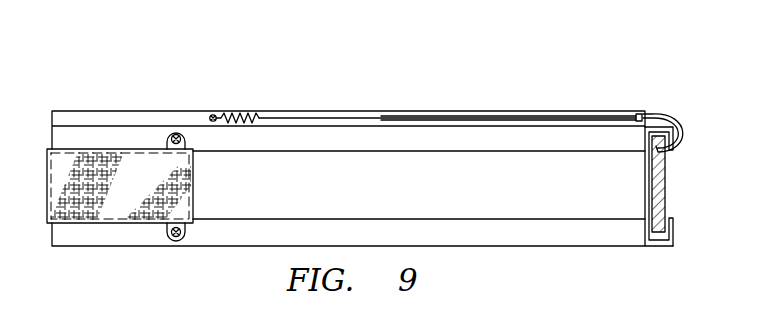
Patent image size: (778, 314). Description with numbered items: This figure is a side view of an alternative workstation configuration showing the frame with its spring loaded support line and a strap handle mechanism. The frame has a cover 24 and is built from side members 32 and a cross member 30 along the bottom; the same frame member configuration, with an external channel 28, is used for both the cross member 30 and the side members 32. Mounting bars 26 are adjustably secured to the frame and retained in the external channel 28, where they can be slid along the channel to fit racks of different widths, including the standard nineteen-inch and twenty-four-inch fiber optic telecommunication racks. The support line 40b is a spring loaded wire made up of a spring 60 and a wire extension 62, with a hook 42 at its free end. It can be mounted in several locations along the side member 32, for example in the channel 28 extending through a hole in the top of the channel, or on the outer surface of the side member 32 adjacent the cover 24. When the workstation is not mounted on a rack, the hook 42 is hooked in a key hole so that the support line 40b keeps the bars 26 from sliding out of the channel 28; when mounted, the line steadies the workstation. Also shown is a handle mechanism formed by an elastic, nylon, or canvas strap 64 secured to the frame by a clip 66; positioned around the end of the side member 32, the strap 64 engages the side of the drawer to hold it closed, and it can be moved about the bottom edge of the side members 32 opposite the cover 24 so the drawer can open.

The cover 24 is at (118, 111).
The mounting bars 26 is at (667, 185).
The external channel 28 is at (300, 145).
The cross member 30 is at (643, 178).
The side members 32 is at (427, 197).
The support line 40b is at (559, 115).
The hook 42 is at (664, 112).
The spring 60 is at (232, 116).
The wire extension 62 is at (320, 116).
The strap 64 is at (50, 171).
The clip 66 is at (176, 243).